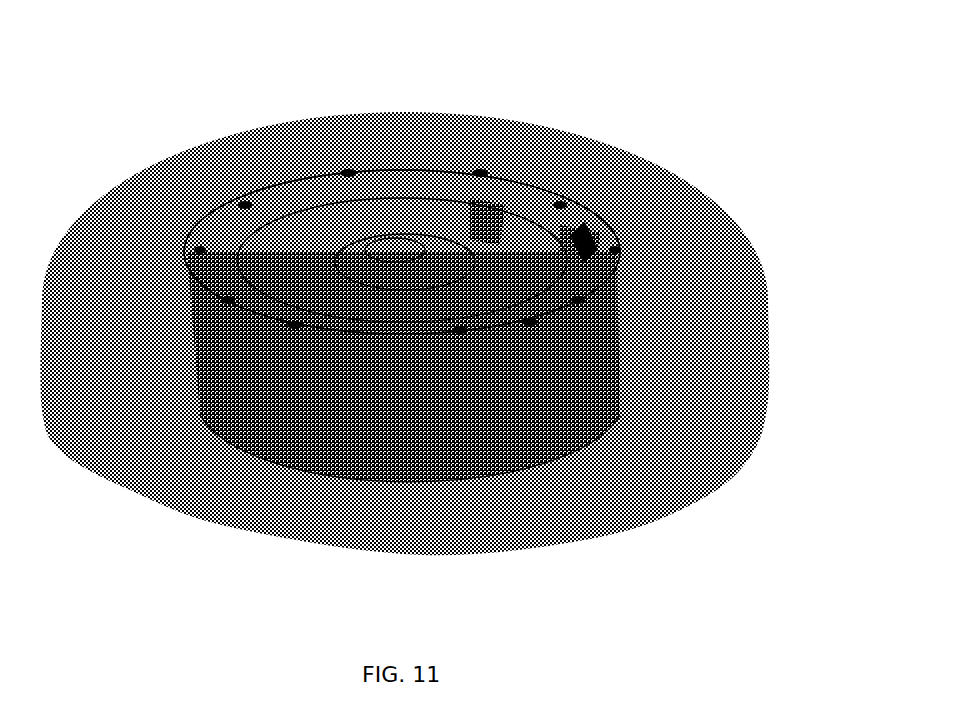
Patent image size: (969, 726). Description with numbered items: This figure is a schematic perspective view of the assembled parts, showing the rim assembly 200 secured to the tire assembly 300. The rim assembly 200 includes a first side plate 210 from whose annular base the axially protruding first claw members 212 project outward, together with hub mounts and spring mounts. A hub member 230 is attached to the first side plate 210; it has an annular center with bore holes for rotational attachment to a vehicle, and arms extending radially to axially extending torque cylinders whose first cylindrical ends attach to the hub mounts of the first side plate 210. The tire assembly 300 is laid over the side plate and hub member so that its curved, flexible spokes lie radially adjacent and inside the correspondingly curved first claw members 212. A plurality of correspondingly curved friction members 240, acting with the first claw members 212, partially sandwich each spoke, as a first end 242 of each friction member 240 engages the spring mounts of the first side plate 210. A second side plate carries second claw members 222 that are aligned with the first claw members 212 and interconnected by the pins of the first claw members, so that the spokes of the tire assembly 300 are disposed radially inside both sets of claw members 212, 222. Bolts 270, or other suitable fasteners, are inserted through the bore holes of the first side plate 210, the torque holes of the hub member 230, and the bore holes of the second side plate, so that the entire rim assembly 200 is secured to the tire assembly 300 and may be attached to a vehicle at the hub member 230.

The tire assembly 300 is at (745, 211).
The rim assembly 200 is at (494, 164).
The first side plate 210 is at (429, 166).
The hub member 230 is at (393, 238).
The bolts 270 is at (348, 172).
The first end 242 is at (492, 217).
The friction members 240 is at (587, 233).
The first claw members 212 is at (272, 373).
The second claw members 222 is at (267, 437).